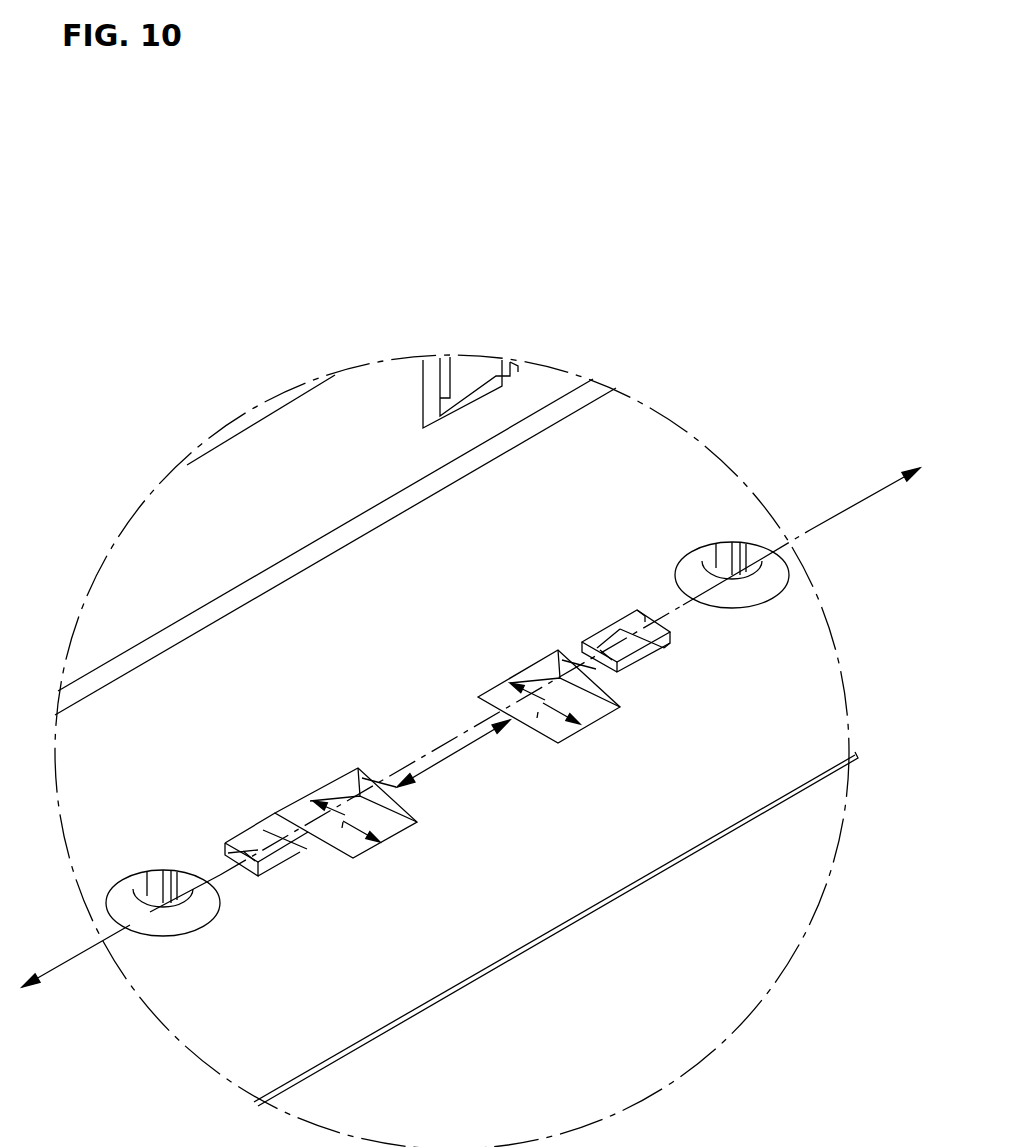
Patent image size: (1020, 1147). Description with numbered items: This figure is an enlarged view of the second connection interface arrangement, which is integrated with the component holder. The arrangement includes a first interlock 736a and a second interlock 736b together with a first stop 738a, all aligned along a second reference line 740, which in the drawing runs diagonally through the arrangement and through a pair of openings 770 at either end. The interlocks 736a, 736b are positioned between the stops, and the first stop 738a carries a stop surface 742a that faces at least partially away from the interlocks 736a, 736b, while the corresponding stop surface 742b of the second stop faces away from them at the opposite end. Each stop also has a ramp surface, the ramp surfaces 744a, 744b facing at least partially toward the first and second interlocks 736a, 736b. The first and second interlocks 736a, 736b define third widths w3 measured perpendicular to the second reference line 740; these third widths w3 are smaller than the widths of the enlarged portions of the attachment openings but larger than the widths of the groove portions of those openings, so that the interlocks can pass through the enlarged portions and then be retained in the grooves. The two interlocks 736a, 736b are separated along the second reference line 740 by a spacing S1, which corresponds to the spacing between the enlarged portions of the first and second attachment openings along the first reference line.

The second reference line 740 is at (72, 957).
The mounting holes 770 is at (162, 922).
The first interlock 736a is at (565, 742).
The second interlock 736b is at (397, 835).
The stop surface 742a is at (638, 620).
The stop surface 742b is at (245, 874).
The ramp surface 744a is at (625, 652).
The ramp surface 744b is at (273, 851).
The first stop 738a is at (670, 648).
The spacing S1 is at (452, 752).
The third width w3 is at (343, 822).